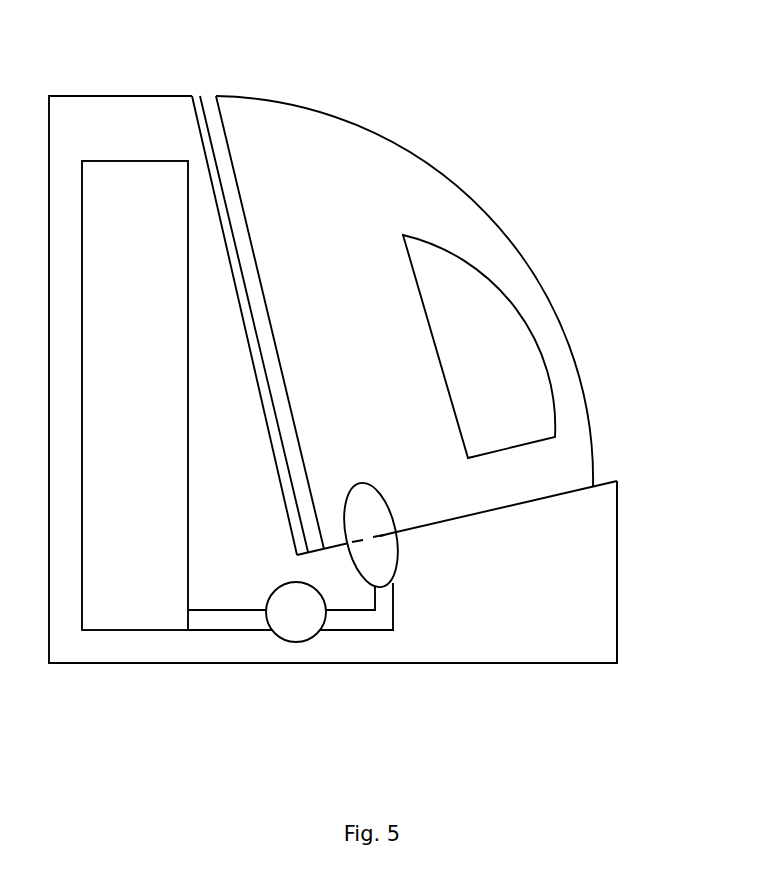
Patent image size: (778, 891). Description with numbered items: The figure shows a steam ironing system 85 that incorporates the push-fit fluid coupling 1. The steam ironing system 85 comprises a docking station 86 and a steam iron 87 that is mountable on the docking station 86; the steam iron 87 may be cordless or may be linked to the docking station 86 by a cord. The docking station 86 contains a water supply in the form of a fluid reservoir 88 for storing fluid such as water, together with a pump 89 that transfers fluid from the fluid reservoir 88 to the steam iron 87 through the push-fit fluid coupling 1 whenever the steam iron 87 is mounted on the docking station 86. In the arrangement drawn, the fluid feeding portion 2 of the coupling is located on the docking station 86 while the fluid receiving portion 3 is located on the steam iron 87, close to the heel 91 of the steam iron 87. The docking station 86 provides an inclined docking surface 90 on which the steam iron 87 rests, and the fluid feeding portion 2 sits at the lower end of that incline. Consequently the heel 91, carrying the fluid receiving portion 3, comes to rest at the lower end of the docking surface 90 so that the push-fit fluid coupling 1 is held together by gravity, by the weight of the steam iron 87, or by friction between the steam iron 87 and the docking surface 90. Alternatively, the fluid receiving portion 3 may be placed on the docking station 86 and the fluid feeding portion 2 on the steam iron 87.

The steam ironing system 85 is at (562, 165).
The docking station 86 is at (607, 610).
The steam iron 87 is at (582, 448).
The fluid reservoir 88 is at (170, 508).
The pump 89 is at (312, 625).
The docking surface 90 is at (540, 498).
The heel 91 is at (268, 556).
The push-fit fluid coupling 1 is at (406, 509).
The fluid feeding portion 2 is at (385, 560).
The fluid receiving portion 3 is at (360, 502).